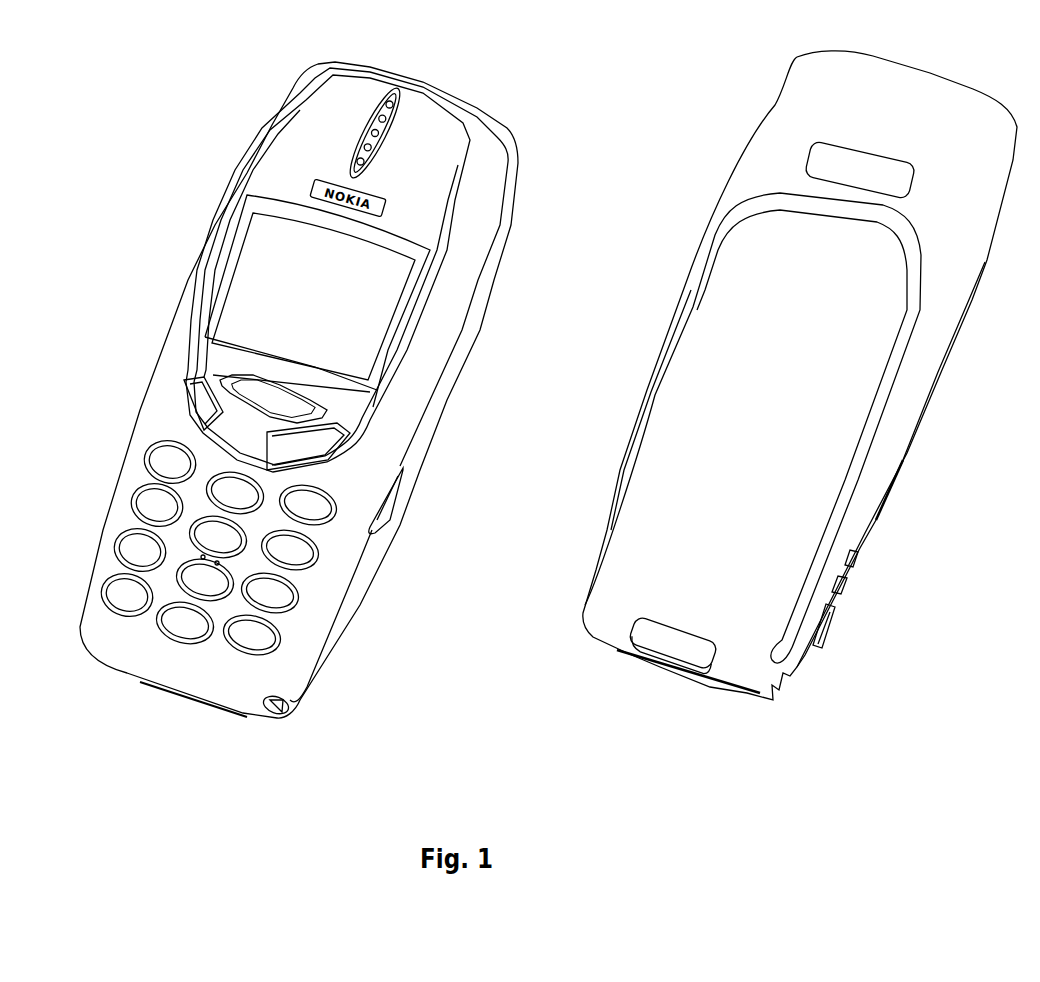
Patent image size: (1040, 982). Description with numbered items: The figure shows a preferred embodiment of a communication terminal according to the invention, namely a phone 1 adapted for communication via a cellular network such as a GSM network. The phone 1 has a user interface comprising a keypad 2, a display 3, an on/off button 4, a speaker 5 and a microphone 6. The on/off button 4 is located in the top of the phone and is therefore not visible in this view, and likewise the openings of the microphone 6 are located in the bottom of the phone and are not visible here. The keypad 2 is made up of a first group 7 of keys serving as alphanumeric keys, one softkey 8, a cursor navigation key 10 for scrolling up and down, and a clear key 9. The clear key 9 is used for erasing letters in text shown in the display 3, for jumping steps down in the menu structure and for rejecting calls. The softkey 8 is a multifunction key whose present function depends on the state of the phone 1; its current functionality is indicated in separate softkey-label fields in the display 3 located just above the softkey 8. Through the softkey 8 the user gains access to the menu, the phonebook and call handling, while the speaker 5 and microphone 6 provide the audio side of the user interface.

The phone 1 is at (710, 177).
The keypad 2 is at (125, 433).
The display 3 is at (290, 290).
The on/off button 4 is at (423, 82).
The speaker 5 is at (368, 127).
The microphone 6 is at (183, 708).
The first group of keys 7 is at (302, 577).
The softkey 8 is at (257, 403).
The clear key 9 is at (200, 403).
The cursor navigation key 10 is at (317, 443).